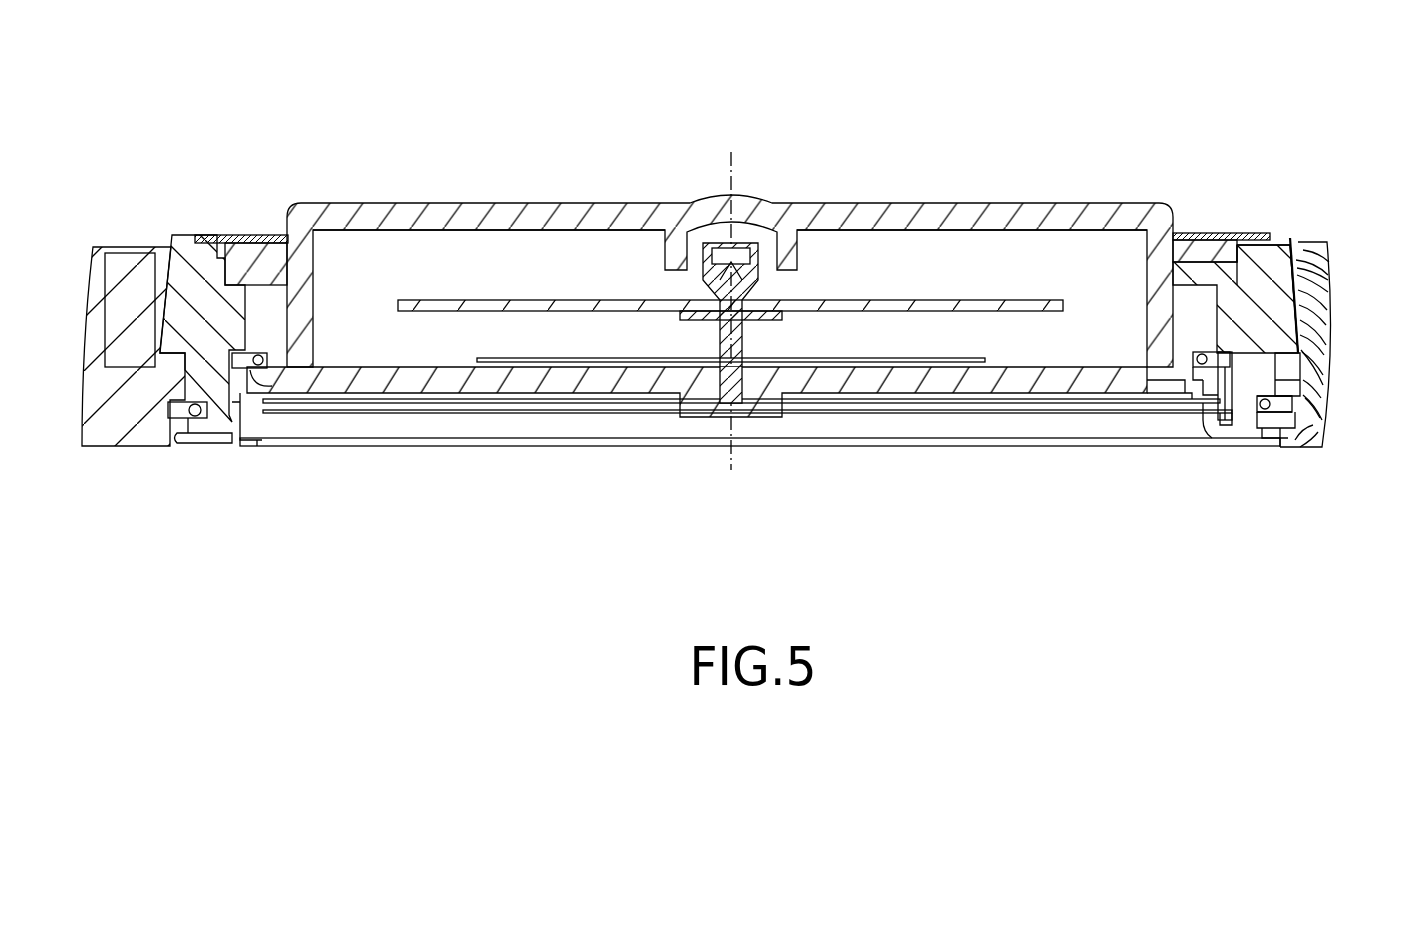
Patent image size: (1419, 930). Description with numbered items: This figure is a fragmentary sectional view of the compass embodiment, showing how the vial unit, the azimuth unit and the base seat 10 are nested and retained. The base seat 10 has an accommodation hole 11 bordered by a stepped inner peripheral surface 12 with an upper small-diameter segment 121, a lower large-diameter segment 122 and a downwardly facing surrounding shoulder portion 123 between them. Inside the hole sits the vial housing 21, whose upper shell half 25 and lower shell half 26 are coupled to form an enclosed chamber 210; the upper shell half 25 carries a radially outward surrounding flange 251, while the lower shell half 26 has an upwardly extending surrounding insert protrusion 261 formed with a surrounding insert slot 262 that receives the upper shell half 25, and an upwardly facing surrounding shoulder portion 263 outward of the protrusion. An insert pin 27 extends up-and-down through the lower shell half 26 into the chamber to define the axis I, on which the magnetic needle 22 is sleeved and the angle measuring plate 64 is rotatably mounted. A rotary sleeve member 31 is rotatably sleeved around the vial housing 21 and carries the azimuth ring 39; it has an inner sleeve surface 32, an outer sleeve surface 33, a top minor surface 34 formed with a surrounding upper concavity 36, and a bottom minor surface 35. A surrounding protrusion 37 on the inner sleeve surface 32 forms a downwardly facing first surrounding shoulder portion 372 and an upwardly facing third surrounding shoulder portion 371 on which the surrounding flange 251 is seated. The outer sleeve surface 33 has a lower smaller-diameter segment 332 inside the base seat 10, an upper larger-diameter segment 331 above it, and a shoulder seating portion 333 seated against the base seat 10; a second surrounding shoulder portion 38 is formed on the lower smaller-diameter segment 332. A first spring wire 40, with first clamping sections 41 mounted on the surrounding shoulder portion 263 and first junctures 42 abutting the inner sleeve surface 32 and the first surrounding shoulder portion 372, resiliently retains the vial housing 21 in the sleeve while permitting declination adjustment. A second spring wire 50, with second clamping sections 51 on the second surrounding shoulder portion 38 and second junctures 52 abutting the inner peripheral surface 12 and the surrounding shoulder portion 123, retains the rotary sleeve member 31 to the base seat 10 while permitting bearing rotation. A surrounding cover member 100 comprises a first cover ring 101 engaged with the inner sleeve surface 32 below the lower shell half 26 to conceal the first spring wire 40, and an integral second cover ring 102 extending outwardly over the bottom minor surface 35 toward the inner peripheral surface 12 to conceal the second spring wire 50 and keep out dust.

The axis I is at (731, 152).
The base seat 10 is at (92, 450).
The surrounding cover member 100 is at (232, 450).
The first cover ring 101 is at (254, 437).
The second cover ring 102 is at (195, 443).
The accommodation hole 11 is at (1020, 445).
The inner peripheral surface 12 is at (1307, 432).
The upper small-diameter segment 121 is at (1306, 380).
The lower large-diameter segment 122 is at (1295, 440).
The surrounding shoulder portion 123 is at (1310, 398).
The vial housing 21 is at (872, 192).
The enclosed chamber 210 is at (907, 250).
The magnetic needle 22 is at (540, 303).
The upper shell half 25 is at (985, 234).
The surrounding flange 251 is at (1192, 262).
The lower shell half 26 is at (965, 380).
The surrounding insert protrusion 261 is at (1172, 396).
The surrounding insert slot 262 is at (1150, 385).
The surrounding shoulder portion 263 is at (1200, 405).
The insert pin 27 is at (737, 387).
The rotary sleeve member 31 is at (1293, 250).
The inner sleeve surface 32 is at (1230, 262).
The outer sleeve surface 33 is at (1304, 240).
The upper larger-diameter segment 331 is at (1320, 262).
The lower smaller-diameter segment 332 is at (1302, 352).
The shoulder seating portion 333 is at (1300, 335).
The top minor surface 34 is at (1292, 258).
The bottom minor surface 35 is at (1229, 422).
The surrounding upper concavity 36 is at (1293, 258).
The surrounding protrusion 37 is at (1300, 292).
The third surrounding shoulder portion 371 is at (1297, 275).
The first surrounding shoulder portion 372 is at (1300, 308).
The second surrounding shoulder portion 38 is at (1265, 430).
The azimuth ring 39 is at (1208, 239).
The first spring wire 40 is at (1205, 404).
The first clamping sections 41 is at (1203, 382).
The first junctures 42 is at (1216, 396).
The second spring wire 50 is at (1280, 446).
The second clamping sections 51 is at (1264, 414).
The second junctures 52 is at (1302, 452).
The angle measuring plate 64 is at (617, 362).